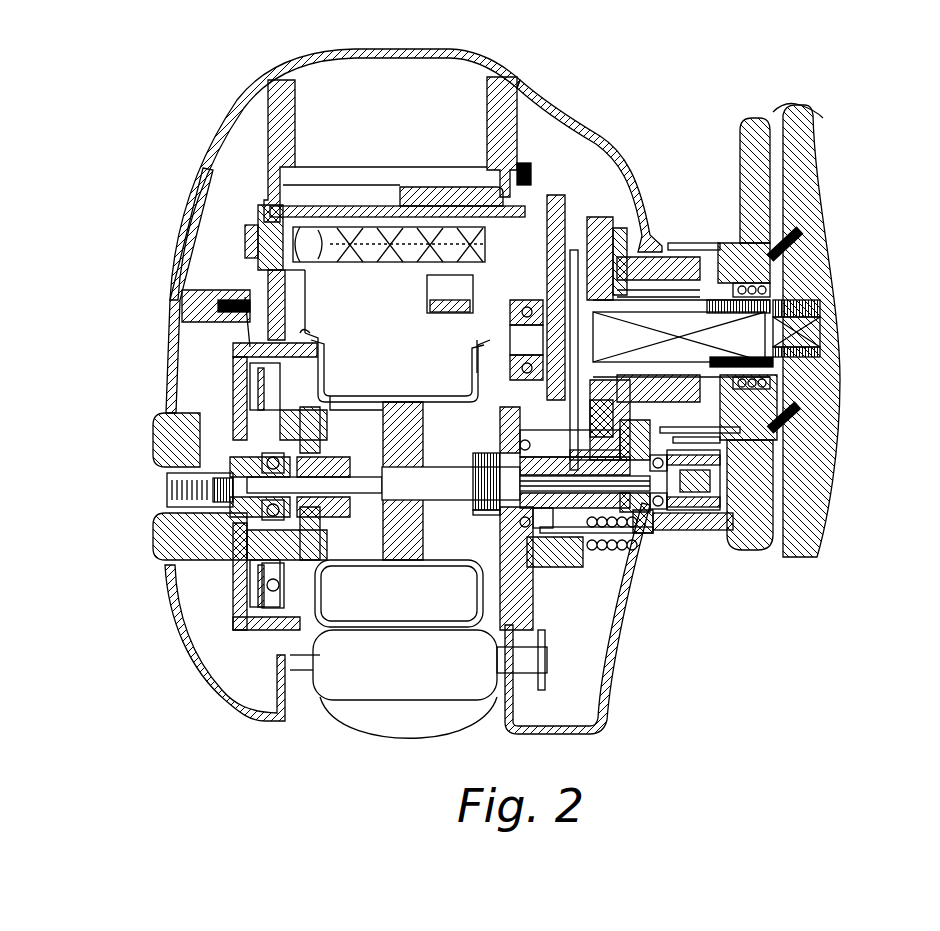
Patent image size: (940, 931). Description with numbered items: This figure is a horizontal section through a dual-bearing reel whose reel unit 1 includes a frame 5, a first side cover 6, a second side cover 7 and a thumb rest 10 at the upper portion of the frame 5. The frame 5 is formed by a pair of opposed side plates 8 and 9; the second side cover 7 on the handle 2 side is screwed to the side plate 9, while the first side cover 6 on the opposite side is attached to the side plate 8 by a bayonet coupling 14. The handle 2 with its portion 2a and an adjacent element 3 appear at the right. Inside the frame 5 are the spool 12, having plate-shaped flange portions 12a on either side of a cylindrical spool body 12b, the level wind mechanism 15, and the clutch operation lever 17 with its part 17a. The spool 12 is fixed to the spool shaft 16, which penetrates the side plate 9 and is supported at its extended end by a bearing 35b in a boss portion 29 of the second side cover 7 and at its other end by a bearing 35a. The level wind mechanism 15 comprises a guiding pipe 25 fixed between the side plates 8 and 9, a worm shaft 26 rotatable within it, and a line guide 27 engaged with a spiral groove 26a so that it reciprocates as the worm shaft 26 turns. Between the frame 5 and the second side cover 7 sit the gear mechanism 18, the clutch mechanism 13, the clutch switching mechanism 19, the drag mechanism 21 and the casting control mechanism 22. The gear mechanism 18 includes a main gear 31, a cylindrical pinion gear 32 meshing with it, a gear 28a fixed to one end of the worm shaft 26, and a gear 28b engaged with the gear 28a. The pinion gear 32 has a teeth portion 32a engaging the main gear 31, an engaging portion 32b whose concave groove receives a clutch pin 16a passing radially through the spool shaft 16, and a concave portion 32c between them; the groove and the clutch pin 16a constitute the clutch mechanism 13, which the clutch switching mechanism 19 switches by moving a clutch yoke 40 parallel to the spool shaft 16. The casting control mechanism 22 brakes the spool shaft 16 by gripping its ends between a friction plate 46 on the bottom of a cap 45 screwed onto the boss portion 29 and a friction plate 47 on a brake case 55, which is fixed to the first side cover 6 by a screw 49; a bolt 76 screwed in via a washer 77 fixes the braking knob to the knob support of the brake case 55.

The reel unit 1 is at (436, 49).
The handle 2 is at (801, 155).
The body flange 2a is at (775, 112).
The handle support 3 is at (748, 117).
The frame 5 is at (536, 94).
The first side cover 6 is at (204, 184).
The second side cover 7 is at (670, 247).
The side plate 8 is at (280, 298).
The side plate 9 is at (473, 327).
The thumb rest 10 is at (395, 33).
The spool 12 is at (372, 403).
The flange portions 12a is at (312, 338).
The spool body 12b is at (430, 410).
The clutch mechanism 13 is at (491, 452).
The bayonet coupling 14 is at (246, 658).
The level wind mechanism 15 is at (386, 203).
The spool shaft 16 is at (382, 470).
The clutch pin 16a is at (474, 515).
The clutch operation lever 17 is at (373, 660).
The motor terminal 17a is at (543, 660).
The gear mechanism 18 is at (614, 159).
The clutch switching mechanism 19 is at (600, 510).
The drag mechanism 21 is at (637, 257).
The casting control mechanism 22 is at (735, 436).
The guiding pipe 25 is at (320, 217).
The worm shaft 26 is at (403, 247).
The spiral groove 26a is at (353, 247).
The line guide 27 is at (457, 183).
The gear 28a is at (560, 233).
The gear 28b is at (545, 410).
The boss portion 29 is at (693, 530).
The main gear 31 is at (623, 253).
The pinion gear 32 is at (645, 535).
The teeth portion 32a is at (620, 550).
The engaging portion 32b is at (497, 553).
The concave portion 32c is at (547, 568).
The bearing 35a is at (233, 567).
The bearing 35b is at (673, 527).
The clutch yoke 40 is at (589, 559).
The cap 45 is at (727, 520).
The friction plate 46 is at (720, 477).
The friction plate 47 is at (167, 480).
The screw 49 is at (250, 278).
The brake case 55 is at (233, 380).
The bolt 76 is at (163, 493).
The washer 77 is at (153, 507).